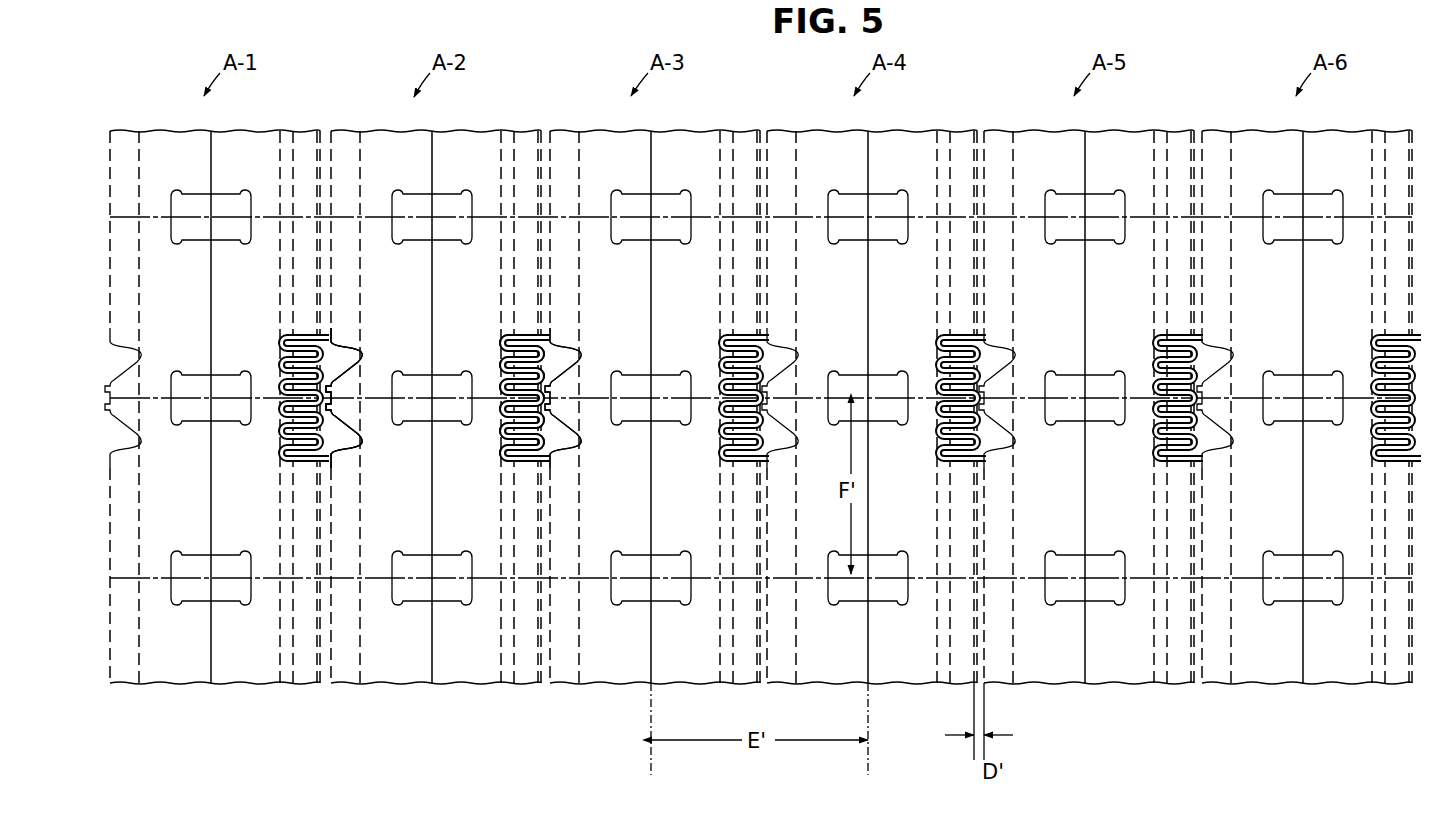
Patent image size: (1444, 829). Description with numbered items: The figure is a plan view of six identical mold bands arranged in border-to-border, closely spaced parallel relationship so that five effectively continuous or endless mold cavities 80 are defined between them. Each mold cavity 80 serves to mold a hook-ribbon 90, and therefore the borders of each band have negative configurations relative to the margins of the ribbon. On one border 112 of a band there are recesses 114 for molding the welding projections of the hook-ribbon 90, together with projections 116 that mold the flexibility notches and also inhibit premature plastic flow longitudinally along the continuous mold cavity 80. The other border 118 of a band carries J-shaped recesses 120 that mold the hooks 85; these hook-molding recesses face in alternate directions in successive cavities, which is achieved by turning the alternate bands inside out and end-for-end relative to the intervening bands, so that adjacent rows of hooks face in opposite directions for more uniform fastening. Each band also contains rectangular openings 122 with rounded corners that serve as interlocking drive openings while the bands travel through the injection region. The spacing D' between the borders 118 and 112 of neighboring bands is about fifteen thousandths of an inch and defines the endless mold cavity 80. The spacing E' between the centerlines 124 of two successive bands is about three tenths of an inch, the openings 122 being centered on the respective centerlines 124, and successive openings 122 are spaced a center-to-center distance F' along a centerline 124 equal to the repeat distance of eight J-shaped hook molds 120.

The mold cavity 80 is at (669, 365).
The hooks 85 is at (819, 393).
The hook-ribbon 90 is at (431, 426).
The border 112 is at (656, 458).
The recesses 114 is at (369, 397).
The projections 116 is at (359, 397).
The other border 118 is at (955, 458).
The J-shaped recesses 120 is at (495, 383).
The rectangular opening 122 is at (757, 378).
The centerline 124 is at (734, 475).